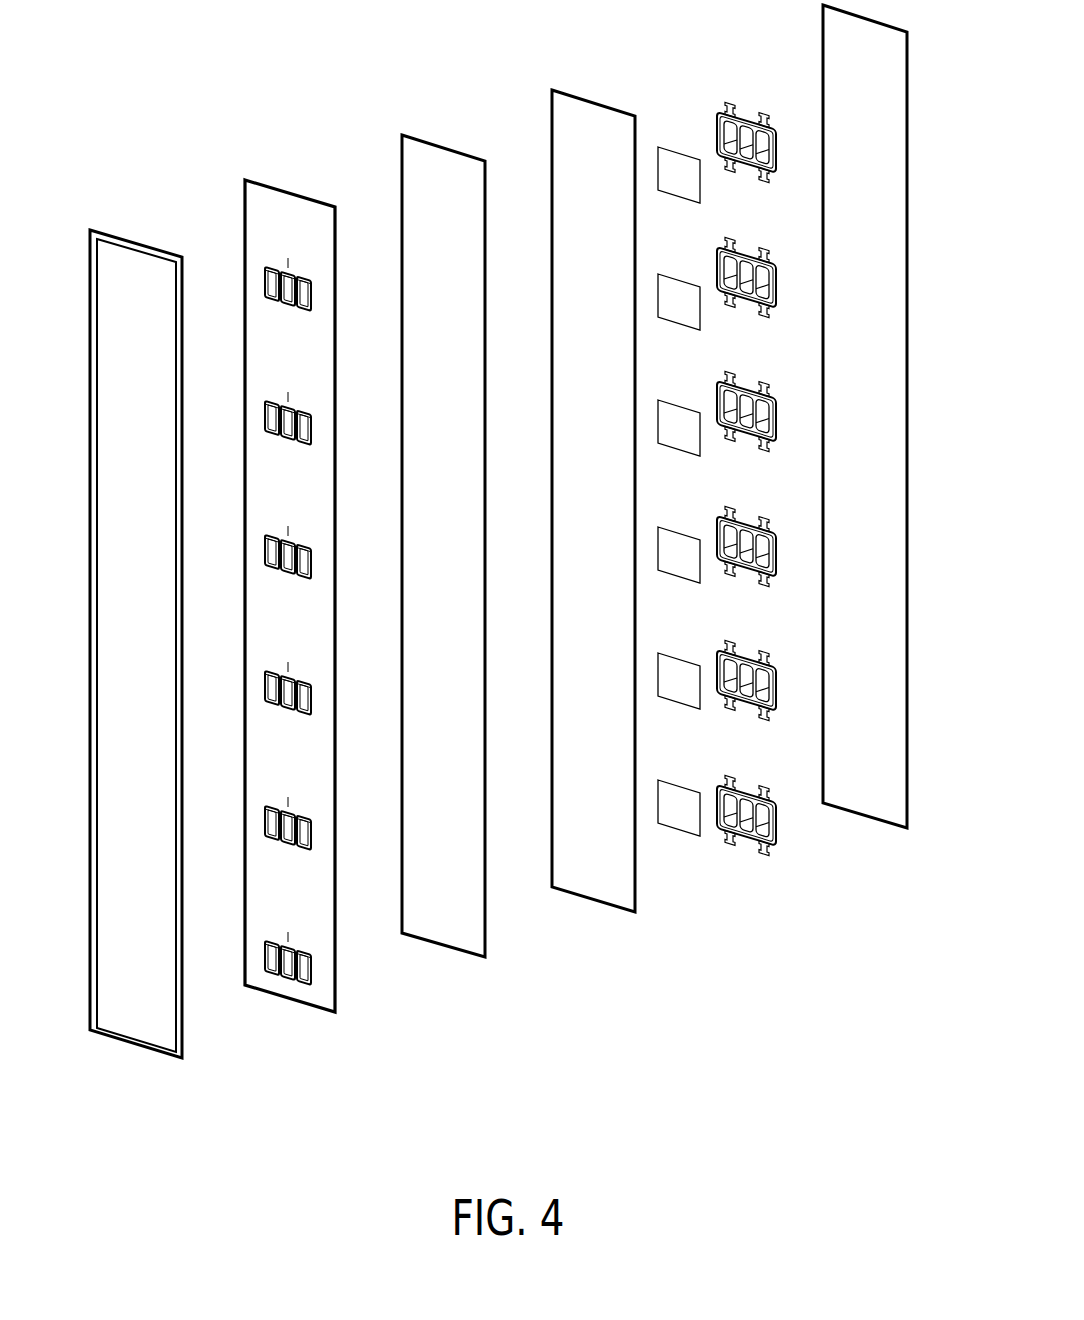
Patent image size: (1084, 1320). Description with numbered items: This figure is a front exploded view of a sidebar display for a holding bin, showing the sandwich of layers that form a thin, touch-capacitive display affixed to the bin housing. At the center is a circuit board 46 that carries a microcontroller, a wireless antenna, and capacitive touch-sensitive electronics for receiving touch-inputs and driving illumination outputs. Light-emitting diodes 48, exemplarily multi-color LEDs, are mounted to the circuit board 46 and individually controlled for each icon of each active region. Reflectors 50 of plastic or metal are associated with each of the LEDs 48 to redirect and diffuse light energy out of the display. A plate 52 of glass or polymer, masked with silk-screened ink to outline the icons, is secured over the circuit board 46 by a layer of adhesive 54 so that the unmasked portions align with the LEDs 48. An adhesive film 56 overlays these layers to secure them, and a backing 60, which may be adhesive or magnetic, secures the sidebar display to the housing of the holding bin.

The circuit board 46 is at (607, 902).
The light-emitting diodes 48 is at (693, 858).
The reflectors 50 is at (792, 863).
The plate 52 is at (313, 997).
The layer of adhesive 54 is at (448, 945).
The adhesive film 56 is at (150, 1047).
The backing 60 is at (863, 812).